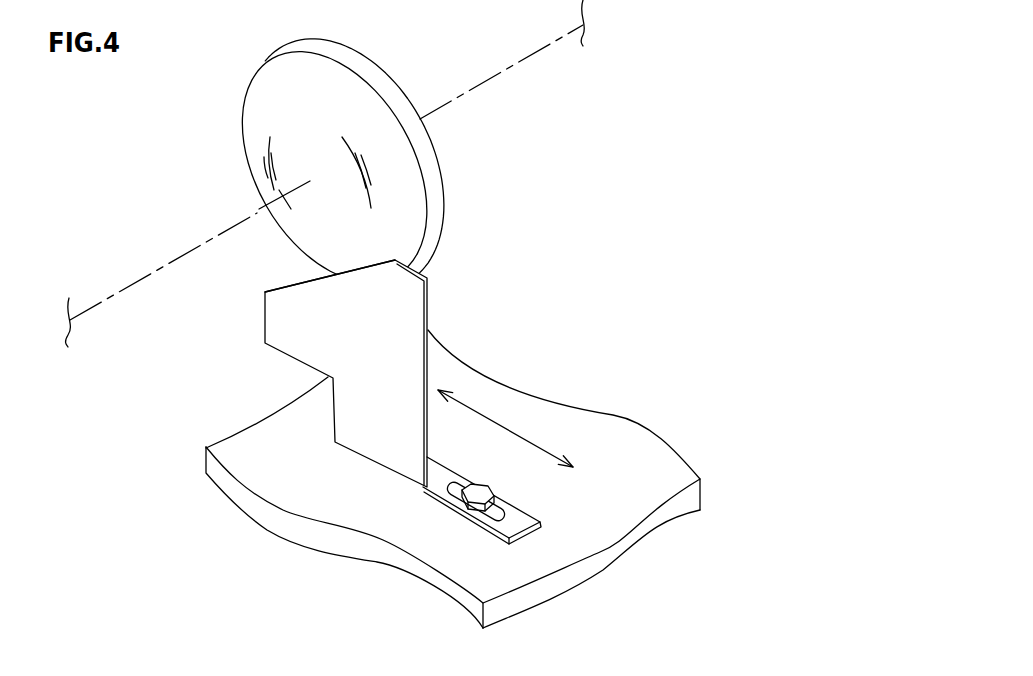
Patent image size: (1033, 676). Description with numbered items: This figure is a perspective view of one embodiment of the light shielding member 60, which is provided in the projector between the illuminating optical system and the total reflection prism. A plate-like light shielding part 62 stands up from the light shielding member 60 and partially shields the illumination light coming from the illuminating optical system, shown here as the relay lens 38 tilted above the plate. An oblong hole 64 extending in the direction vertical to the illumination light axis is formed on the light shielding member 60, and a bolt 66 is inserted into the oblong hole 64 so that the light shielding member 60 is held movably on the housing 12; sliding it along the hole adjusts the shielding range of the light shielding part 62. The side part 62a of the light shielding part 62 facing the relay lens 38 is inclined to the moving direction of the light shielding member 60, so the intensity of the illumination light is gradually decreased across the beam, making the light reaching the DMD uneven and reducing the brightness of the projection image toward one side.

The housing 12 is at (610, 415).
The relay lens 38 is at (435, 183).
The light shielding member 60 is at (500, 390).
The light shielding part 62 is at (265, 316).
The side part 62a is at (290, 285).
The oblong hole 64 is at (498, 508).
The bolt 66 is at (487, 488).